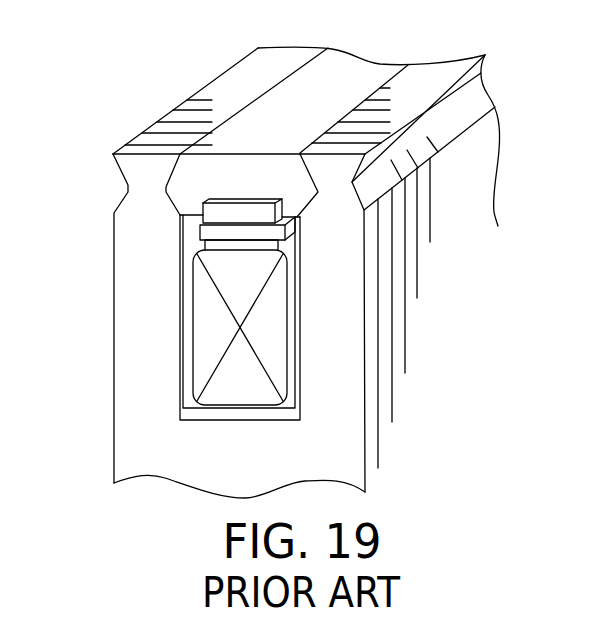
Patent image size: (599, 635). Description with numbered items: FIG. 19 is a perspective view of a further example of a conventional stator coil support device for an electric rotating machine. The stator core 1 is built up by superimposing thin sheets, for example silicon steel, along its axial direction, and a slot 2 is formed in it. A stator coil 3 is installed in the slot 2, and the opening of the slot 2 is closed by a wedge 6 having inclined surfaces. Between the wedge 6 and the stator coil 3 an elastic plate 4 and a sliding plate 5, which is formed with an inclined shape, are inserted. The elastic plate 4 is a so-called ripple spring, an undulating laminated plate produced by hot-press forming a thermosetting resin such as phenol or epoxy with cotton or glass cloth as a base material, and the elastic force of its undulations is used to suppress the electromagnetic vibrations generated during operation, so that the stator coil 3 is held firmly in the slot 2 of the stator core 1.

The stator core 1 is at (140, 277).
The slot 2 is at (180, 323).
The stator coil 3 is at (208, 372).
The elastic plate 4 is at (212, 233).
The sliding plate 5 is at (210, 198).
The wedge 6 is at (352, 72).